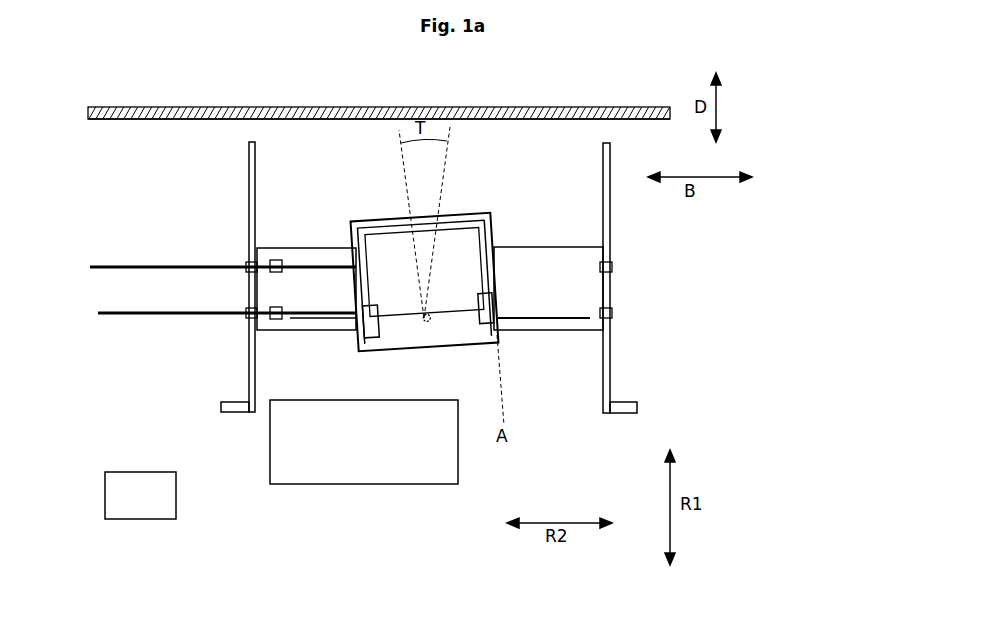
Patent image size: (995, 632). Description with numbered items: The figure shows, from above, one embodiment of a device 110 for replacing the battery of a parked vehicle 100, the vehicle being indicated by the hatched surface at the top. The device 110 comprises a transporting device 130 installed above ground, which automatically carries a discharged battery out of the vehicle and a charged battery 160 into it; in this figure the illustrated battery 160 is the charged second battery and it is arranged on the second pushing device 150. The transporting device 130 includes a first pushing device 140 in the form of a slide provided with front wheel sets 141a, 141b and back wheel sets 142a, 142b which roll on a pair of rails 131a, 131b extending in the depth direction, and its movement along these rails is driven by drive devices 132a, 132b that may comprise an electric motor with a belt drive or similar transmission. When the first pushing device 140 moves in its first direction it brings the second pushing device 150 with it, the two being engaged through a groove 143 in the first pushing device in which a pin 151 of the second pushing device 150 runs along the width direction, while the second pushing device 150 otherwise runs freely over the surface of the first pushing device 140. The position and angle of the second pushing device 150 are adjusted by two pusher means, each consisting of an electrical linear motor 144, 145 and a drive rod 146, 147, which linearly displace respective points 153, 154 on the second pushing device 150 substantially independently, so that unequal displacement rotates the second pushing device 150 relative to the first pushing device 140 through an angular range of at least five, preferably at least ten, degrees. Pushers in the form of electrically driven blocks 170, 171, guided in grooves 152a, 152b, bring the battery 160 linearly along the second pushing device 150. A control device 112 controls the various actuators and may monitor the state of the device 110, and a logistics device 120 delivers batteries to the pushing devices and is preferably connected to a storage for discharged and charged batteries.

The vehicle 100 is at (200, 118).
The device for battery replacement 110 is at (800, 178).
The control device 112 is at (140, 495).
The logistics device 120 is at (364, 442).
The transporting device 130 is at (230, 348).
The rail 131a is at (249, 204).
The rail 131b is at (610, 228).
The drive device 132a is at (221, 410).
The drive device 132b is at (637, 408).
The first pushing device 140 is at (575, 335).
The front wheel set 141a is at (250, 264).
The front wheel set 141b is at (612, 265).
The back wheel set 142a is at (250, 311).
The back wheel set 142b is at (612, 312).
The groove 143 is at (612, 324).
The electrical linear motor 144 is at (280, 258).
The electrical linear motor 145 is at (284, 322).
The drive rod 146 is at (212, 276).
The drive rod 147 is at (212, 323).
The second pushing device 150 is at (430, 271).
The pin 151 is at (421, 322).
The groove 152a is at (363, 230).
The groove 152b is at (492, 232).
The point on the second pushing device 153 is at (356, 252).
The point on the second pushing device 154 is at (356, 310).
The battery 160 is at (424, 271).
The pusher 170 is at (361, 330).
The pusher 171 is at (482, 330).